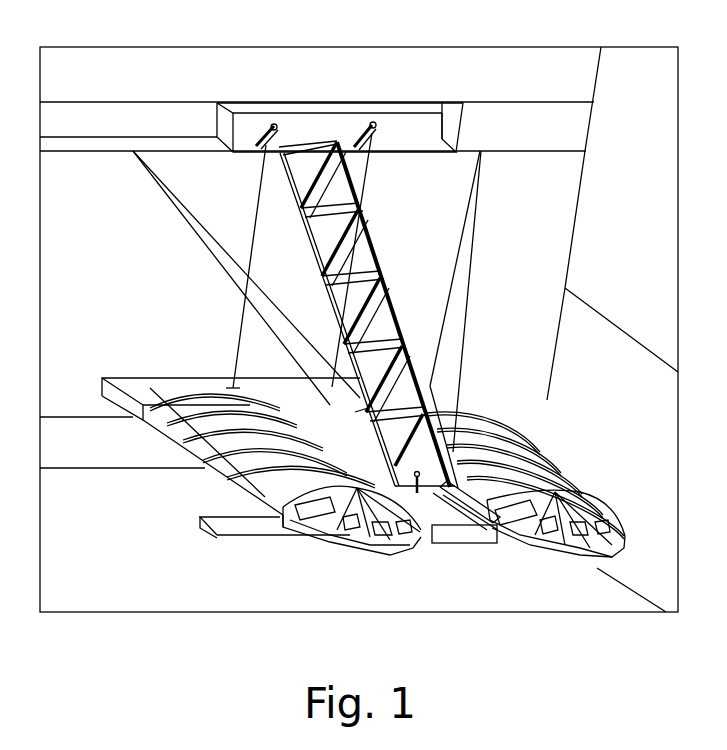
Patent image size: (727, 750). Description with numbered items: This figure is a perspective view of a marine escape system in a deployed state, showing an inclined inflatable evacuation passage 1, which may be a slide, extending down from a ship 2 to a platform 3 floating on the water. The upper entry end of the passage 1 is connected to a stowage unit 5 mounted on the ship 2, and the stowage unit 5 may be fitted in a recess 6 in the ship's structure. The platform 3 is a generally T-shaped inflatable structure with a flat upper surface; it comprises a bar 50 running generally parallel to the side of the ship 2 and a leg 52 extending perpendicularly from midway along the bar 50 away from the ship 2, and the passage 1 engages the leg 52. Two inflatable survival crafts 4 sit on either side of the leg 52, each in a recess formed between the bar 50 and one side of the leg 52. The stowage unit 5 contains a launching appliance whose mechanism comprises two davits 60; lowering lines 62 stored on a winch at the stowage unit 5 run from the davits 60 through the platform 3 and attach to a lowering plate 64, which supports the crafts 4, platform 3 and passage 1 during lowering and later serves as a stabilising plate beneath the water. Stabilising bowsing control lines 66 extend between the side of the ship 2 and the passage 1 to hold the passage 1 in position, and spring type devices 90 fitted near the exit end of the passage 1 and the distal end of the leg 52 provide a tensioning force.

The inflatable evacuation passage 1 is at (385, 245).
The ship 2 is at (563, 208).
The platform 3 is at (136, 383).
The inflatable survival crafts 4 is at (207, 467).
The stowage unit 5 is at (323, 110).
The recess 6 is at (433, 125).
The bar 50 is at (265, 392).
The leg 52 is at (362, 410).
The davits 60 is at (267, 128).
The lowering lines 62 is at (267, 176).
The lowering plate 64 is at (233, 524).
The stabilising bowsing control lines 66 is at (213, 253).
The spring type devices 90 is at (440, 525).